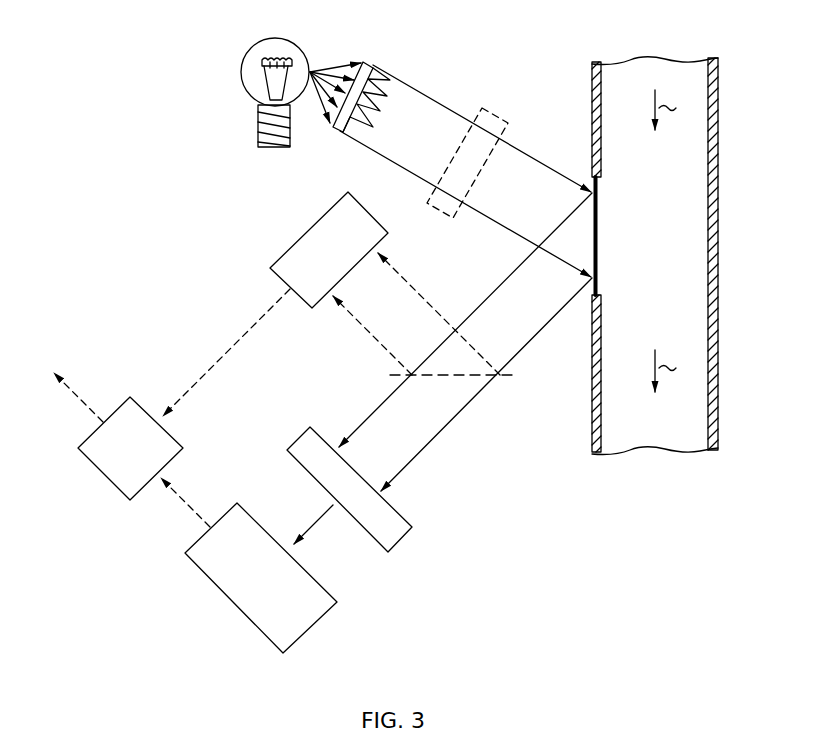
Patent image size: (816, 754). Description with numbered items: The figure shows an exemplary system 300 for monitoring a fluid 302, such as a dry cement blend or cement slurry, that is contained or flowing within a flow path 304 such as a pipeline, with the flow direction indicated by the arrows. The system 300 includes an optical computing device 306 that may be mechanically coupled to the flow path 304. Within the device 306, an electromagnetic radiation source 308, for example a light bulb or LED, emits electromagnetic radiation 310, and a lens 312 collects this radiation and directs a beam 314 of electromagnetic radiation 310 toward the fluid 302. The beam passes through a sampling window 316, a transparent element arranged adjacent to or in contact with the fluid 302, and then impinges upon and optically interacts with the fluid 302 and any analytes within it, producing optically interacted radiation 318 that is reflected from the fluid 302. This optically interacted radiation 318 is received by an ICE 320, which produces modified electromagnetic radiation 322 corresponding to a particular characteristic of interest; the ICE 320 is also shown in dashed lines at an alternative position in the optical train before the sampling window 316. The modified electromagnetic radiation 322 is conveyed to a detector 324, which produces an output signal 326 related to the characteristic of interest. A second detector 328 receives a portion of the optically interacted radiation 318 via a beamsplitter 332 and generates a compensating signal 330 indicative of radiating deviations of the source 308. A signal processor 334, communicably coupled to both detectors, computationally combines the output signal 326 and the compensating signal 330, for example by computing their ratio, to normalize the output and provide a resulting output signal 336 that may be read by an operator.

The system 300 is at (556, 71).
The fluid 302 is at (637, 254).
The flow path 304 is at (718, 112).
The optical computing device 306 is at (172, 214).
The electromagnetic radiation source 308 is at (241, 72).
The electromagnetic radiation 310 is at (338, 63).
The lens 312 is at (378, 70).
The beam 314 is at (437, 105).
The sampling window 316 is at (600, 186).
The optically interacted radiation 318 is at (415, 460).
The ICE 320 is at (438, 212).
The modified electromagnetic radiation 322 is at (315, 523).
The detector 324 is at (322, 607).
The output signal 326 is at (185, 503).
The second detector 328 is at (327, 222).
The compensating signal 330 is at (227, 350).
The beamsplitter 332 is at (432, 378).
The signal processor 334 is at (97, 467).
The resulting output signal 336 is at (76, 397).